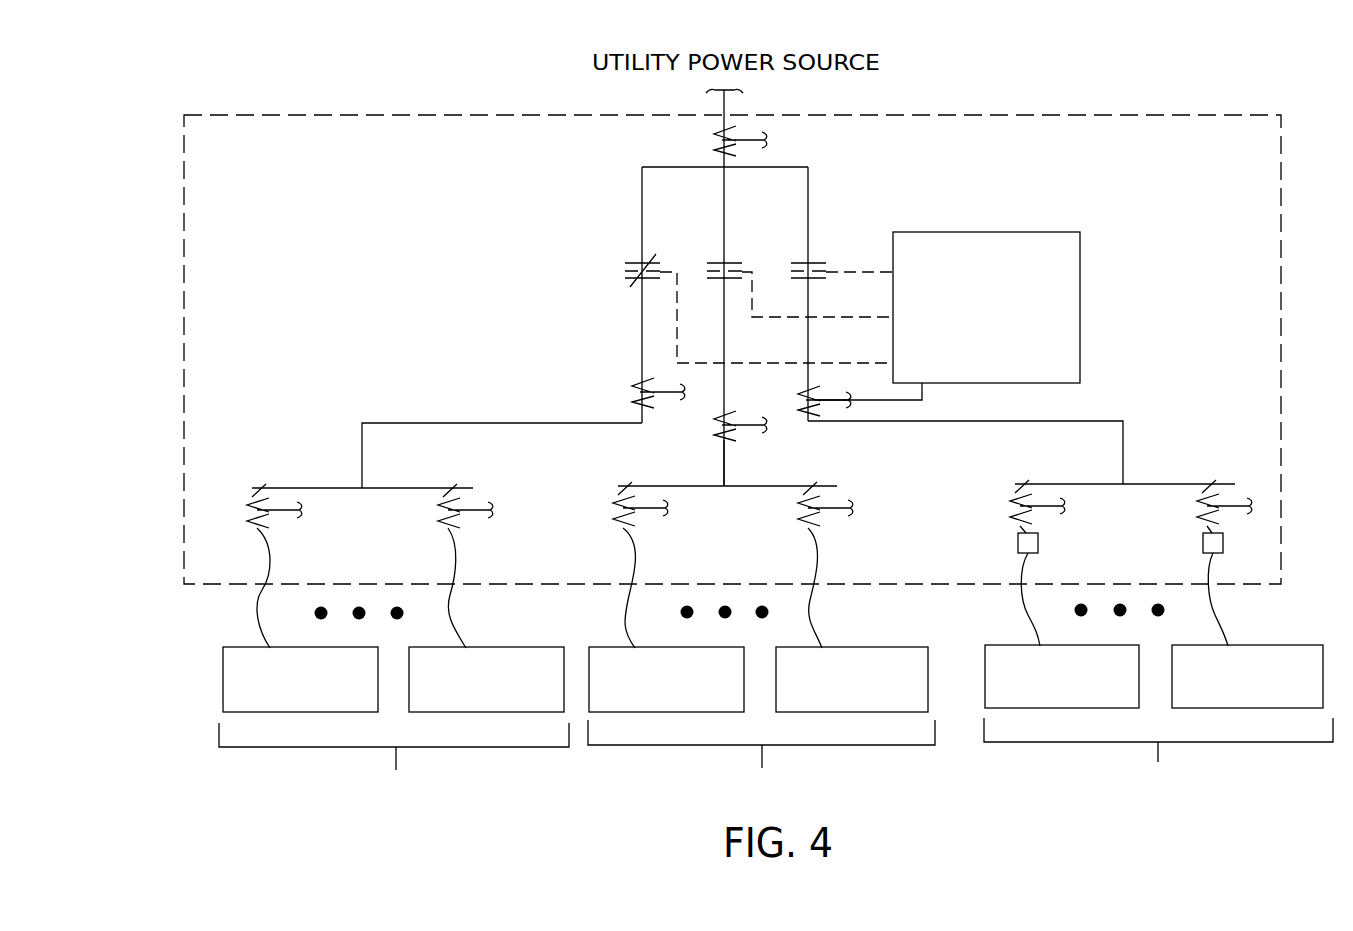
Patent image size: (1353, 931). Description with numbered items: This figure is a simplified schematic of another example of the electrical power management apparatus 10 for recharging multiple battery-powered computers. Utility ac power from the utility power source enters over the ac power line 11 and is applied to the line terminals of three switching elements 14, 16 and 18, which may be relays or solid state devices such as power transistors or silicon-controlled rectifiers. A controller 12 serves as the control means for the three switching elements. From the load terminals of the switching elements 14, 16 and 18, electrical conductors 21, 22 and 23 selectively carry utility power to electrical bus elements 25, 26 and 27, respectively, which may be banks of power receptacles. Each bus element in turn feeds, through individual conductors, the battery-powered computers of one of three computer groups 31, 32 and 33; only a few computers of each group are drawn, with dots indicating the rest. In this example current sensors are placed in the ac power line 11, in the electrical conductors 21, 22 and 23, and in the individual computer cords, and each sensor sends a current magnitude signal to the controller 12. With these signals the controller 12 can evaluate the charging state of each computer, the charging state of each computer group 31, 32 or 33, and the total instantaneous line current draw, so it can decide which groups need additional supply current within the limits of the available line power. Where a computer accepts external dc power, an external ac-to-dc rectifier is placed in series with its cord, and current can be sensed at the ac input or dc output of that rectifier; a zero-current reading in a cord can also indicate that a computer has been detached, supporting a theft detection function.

The electrical power management apparatus 10 is at (940, 96).
The ac power line 11 is at (718, 103).
The controller 12 is at (982, 232).
The switching element 14 is at (636, 252).
The switching element 16 is at (716, 254).
The switching element 18 is at (798, 256).
The electrical conductor 21 is at (497, 423).
The electrical conductor 22 is at (722, 468).
The electrical conductor 23 is at (960, 426).
The electrical bus element 25 is at (300, 486).
The electrical bus element 26 is at (665, 486).
The electrical bus element 27 is at (1058, 482).
The computer group 31 is at (394, 764).
The computer group 32 is at (761, 761).
The computer group 33 is at (1158, 759).